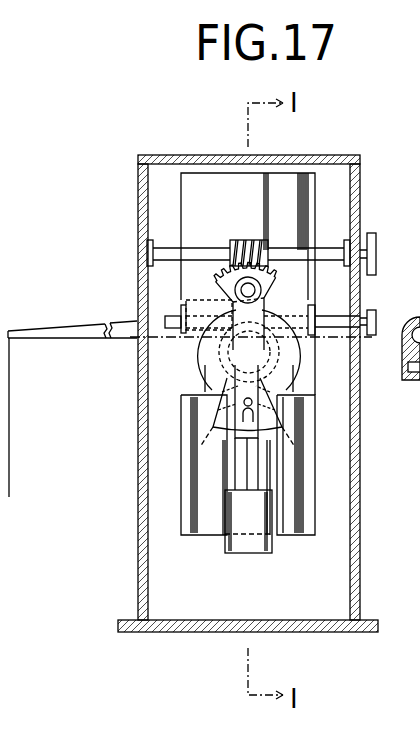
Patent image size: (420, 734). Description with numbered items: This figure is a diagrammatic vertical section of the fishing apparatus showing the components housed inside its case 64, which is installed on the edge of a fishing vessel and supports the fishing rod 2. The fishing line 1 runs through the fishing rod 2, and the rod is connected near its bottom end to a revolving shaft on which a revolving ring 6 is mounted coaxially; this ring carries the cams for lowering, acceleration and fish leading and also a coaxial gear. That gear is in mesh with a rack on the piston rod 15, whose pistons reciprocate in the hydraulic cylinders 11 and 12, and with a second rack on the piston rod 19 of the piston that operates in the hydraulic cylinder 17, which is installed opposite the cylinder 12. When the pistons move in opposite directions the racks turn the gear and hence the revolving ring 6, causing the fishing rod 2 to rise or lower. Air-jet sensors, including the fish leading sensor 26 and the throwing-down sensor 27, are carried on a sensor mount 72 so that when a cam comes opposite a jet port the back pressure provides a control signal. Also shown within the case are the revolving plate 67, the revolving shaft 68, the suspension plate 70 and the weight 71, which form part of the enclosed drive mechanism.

The fishing line 1 is at (10, 478).
The fishing rod 2 is at (40, 328).
The revolving ring 6 is at (206, 360).
The hydraulic cylinder 11 is at (290, 206).
The hydraulic cylinder 12 is at (290, 515).
The piston rod 15 is at (262, 382).
The hydraulic cylinder 17 is at (208, 512).
The piston rod 19 is at (207, 392).
The fish leading sensor 26 is at (290, 446).
The throwing-down sensor 27 is at (204, 445).
The case 64 is at (138, 189).
The revolving plate 67 is at (204, 240).
The revolving shaft 68 is at (238, 238).
The suspension plate 70 is at (236, 298).
The weight 71 is at (252, 556).
The sensor mount 72 is at (284, 389).